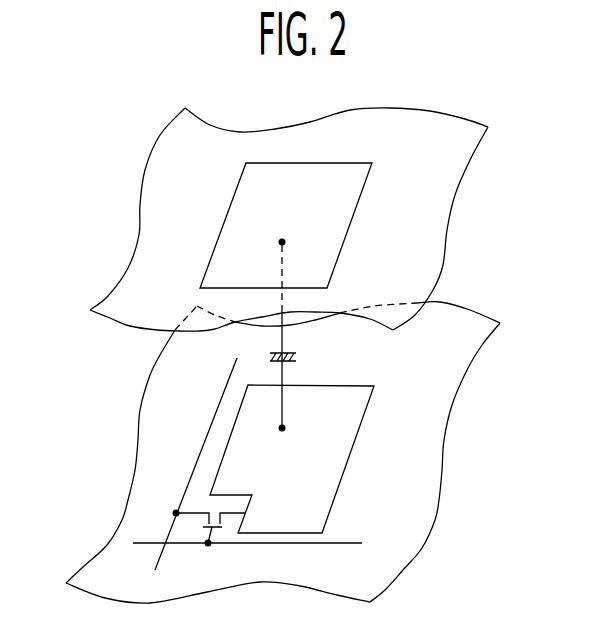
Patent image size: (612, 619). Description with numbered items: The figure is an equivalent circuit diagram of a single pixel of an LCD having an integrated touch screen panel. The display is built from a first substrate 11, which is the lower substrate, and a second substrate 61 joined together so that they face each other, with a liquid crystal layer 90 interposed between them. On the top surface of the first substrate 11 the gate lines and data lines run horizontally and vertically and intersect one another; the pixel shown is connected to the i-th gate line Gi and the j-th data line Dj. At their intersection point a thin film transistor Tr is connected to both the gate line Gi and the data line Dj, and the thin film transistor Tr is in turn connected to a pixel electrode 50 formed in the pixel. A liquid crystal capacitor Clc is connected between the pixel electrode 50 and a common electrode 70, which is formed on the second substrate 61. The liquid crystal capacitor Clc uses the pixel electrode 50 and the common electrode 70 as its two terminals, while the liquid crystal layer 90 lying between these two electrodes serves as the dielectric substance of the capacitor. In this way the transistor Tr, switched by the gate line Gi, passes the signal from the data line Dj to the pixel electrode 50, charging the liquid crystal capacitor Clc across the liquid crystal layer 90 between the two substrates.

The liquid crystal layer 90 is at (112, 365).
The second substrate 61 is at (452, 262).
The common electrode 70 is at (367, 178).
The first substrate 11 is at (468, 382).
The pixel electrode 50 is at (337, 492).
The liquid crystal capacitor Clc is at (300, 335).
The j-th data line Dj is at (196, 448).
The i-th gate line Gi is at (246, 527).
The thin film transistor Tr is at (209, 545).